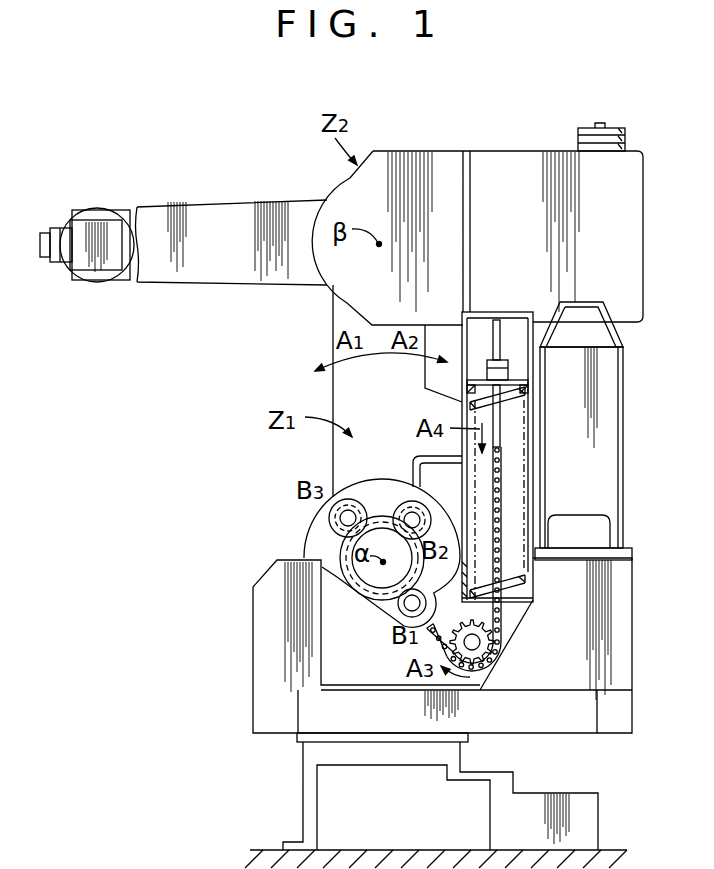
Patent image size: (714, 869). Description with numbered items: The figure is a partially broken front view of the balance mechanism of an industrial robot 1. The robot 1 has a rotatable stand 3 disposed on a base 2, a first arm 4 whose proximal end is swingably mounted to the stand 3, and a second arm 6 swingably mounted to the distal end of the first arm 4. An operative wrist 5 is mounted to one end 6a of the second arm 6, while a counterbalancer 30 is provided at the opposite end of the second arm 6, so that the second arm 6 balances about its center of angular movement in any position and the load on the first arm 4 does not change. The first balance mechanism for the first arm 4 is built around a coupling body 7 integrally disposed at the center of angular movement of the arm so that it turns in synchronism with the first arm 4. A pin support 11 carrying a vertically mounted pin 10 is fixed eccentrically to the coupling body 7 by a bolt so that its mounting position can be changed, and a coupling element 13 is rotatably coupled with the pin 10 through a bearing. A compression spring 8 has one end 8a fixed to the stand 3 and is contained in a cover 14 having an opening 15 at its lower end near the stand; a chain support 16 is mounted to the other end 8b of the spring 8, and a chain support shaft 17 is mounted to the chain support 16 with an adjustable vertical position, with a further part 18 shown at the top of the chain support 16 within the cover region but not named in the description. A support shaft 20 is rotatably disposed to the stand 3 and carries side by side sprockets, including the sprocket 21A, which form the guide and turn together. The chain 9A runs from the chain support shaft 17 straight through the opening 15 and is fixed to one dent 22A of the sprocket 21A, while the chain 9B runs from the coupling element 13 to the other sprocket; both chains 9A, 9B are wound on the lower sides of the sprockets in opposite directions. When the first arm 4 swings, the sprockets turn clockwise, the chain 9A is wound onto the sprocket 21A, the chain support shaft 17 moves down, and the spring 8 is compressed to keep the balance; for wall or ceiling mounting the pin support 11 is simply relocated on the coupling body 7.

The industrial robot 1 is at (275, 383).
The base 2 is at (322, 795).
The rotatable stand 3 is at (253, 655).
The first arm 4 is at (333, 460).
The operative wrist 5 is at (92, 266).
The second arm 6 is at (236, 212).
The one end of the second arm 6a is at (123, 277).
The coupling body 7 is at (348, 570).
The compression spring 8 is at (527, 401).
The one end of the spring 8a is at (530, 593).
The other end of the spring 8b is at (530, 400).
The chain 9A is at (503, 505).
The chain 9B is at (435, 620).
The pin 10 is at (399, 606).
The pin support 11 is at (338, 565).
The coupling element 13 is at (408, 611).
The cover 14 is at (548, 328).
The opening 15 is at (520, 607).
The chain support 16 is at (462, 378).
The chain support shaft 17 is at (502, 432).
The piston 18 is at (510, 364).
The support shaft 20 is at (478, 645).
The sprocket 21A is at (502, 638).
The dent of the sprocket 22A is at (384, 545).
The counterbalancer 30 is at (616, 126).